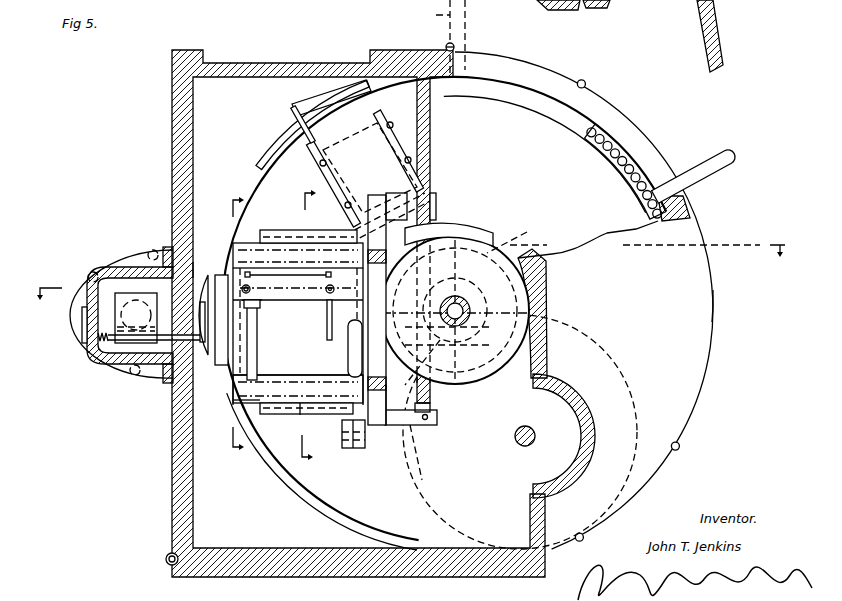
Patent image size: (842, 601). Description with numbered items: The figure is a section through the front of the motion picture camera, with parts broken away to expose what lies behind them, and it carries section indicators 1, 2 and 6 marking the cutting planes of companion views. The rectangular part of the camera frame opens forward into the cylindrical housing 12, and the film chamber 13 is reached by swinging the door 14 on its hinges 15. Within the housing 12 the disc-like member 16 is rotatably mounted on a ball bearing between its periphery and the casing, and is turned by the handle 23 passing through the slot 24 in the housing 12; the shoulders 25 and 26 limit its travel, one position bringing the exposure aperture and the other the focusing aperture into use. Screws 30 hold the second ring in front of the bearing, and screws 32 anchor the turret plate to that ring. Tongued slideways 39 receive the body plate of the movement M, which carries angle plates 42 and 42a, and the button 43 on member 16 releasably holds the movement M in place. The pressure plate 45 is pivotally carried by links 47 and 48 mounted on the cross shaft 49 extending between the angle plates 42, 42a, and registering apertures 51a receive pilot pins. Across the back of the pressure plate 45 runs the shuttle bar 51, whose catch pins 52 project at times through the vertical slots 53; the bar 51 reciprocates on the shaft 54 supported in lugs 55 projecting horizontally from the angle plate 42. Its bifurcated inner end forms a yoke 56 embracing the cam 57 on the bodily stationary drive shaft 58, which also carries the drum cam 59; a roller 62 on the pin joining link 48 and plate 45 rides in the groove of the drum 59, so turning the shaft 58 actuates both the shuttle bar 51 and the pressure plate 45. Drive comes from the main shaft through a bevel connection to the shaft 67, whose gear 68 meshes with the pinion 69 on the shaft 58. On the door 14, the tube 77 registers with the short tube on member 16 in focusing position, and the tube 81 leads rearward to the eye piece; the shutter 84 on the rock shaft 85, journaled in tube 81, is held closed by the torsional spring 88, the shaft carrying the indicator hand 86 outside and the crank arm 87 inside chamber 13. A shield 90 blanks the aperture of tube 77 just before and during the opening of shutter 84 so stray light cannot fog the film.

The cylindrical housing 12 is at (713, 364).
The film chamber 13 is at (305, 311).
The door 14 is at (172, 457).
The hinges 15 is at (166, 564).
The rotatable member 16 is at (616, 184).
The handle 23 is at (704, 181).
The slot 24 is at (619, 122).
The shoulder 25 is at (689, 206).
The shoulder 26 is at (452, 62).
The screws 30 is at (716, 300).
The screws 32 is at (250, 289).
The tongued slideways 39 is at (308, 232).
The angle plate 42 is at (375, 202).
The angle plate 42a is at (218, 275).
The button 43 is at (360, 449).
The pressure plate 45 is at (298, 324).
The link 47 is at (257, 361).
The link or crank arm 48 is at (349, 350).
The cross shaft 49 is at (315, 413).
The shuttle bar 51 is at (278, 300).
The registering apertures 51a is at (288, 276).
The catch pins 52 is at (334, 287).
The vertical slots 53 is at (327, 331).
The shaft 54 is at (417, 391).
The lugs 55 is at (437, 204).
The yoke 56 is at (454, 230).
The cam 57 is at (477, 353).
The drive shaft 58 is at (467, 314).
The drum cam 59 is at (480, 310).
The roller 62 is at (387, 309).
The shaft 67 is at (537, 438).
The gear 68 is at (617, 361).
The pinion 69 is at (452, 288).
The tube 77 is at (196, 268).
The tube 81 is at (130, 267).
The shutter 84 is at (122, 316).
The rock shaft 85 is at (188, 338).
The indicator hand 86 is at (82, 324).
The crank arm 87 is at (203, 356).
The torsional spring 88 is at (111, 346).
The shield 90 is at (264, 168).
The movement M is at (257, 391).
The section line 1 is at (303, 327).
The section line 2 is at (233, 329).
The section line 6 is at (408, 264).